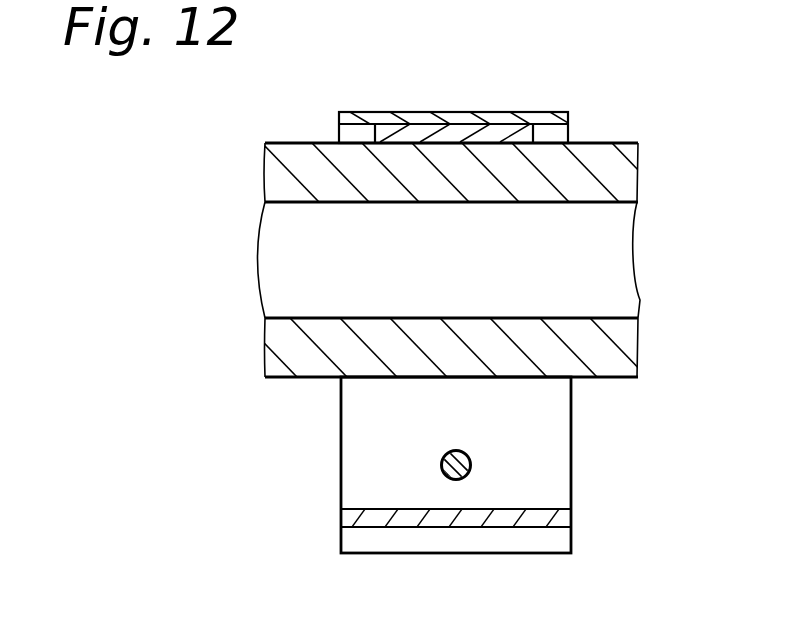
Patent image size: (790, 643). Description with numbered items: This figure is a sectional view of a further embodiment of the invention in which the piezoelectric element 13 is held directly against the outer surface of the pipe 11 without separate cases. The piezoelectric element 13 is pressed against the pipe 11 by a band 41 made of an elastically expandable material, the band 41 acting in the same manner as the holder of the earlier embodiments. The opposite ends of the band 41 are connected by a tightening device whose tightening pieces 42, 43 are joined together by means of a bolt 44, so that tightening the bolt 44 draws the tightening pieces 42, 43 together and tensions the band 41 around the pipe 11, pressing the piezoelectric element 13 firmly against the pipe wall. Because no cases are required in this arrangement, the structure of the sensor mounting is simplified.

The pipe 11 is at (307, 172).
The piezoelectric element 13 is at (485, 133).
The band 41 is at (523, 114).
The tightening piece 42 is at (362, 473).
The tightening piece 43 is at (547, 521).
The bolt 44 is at (472, 460).